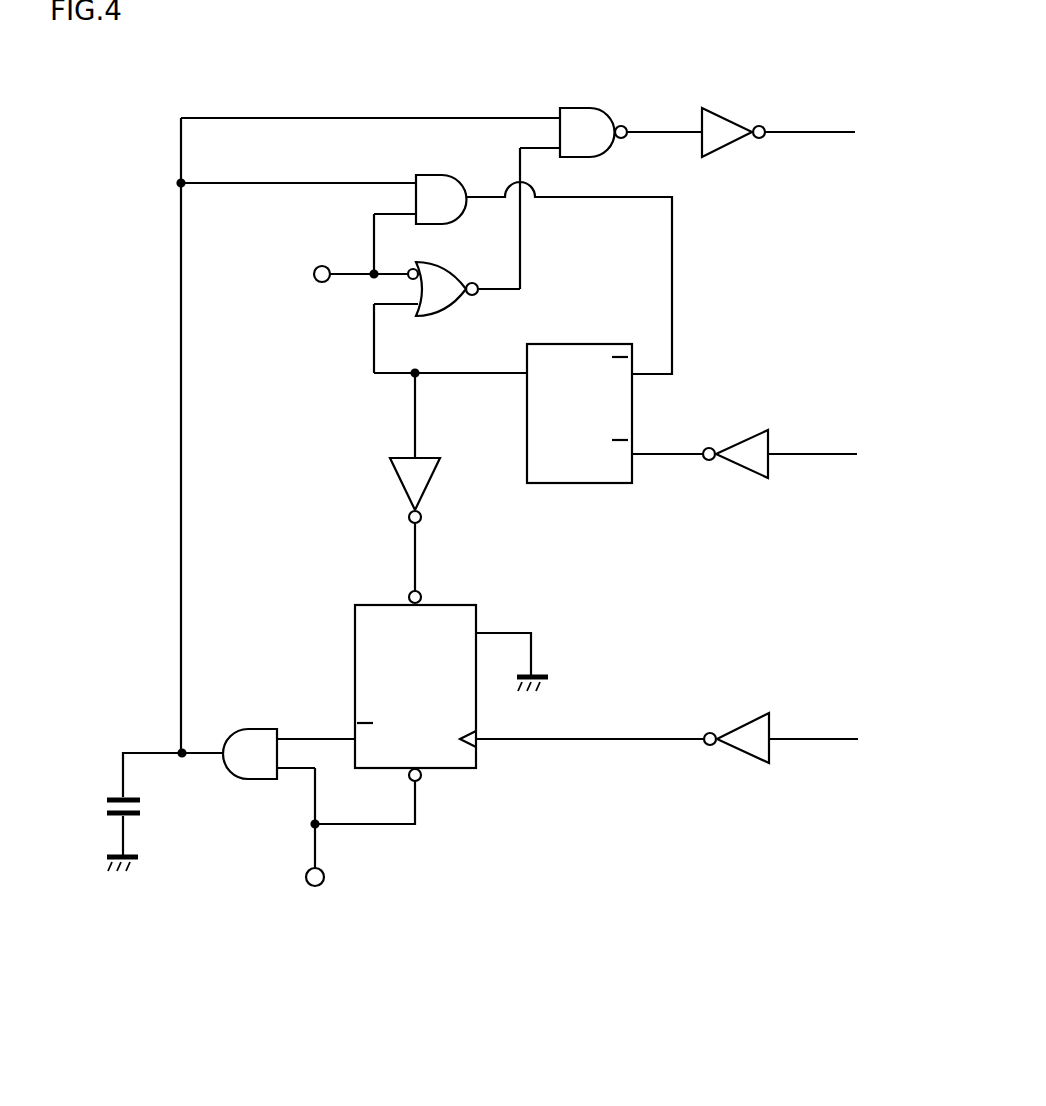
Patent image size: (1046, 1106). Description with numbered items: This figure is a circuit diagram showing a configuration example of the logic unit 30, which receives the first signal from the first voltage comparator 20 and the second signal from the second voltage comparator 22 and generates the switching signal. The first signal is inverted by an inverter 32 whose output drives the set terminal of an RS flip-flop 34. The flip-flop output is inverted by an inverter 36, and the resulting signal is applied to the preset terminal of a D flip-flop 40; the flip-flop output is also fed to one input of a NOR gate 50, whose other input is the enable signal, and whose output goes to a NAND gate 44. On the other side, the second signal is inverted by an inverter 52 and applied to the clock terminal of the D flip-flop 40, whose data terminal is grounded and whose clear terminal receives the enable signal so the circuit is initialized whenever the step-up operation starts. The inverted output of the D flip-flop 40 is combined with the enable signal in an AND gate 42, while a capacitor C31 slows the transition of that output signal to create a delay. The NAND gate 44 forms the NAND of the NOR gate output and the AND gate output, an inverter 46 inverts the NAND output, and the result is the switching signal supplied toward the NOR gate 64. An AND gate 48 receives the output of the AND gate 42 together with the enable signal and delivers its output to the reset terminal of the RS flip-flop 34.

The first voltage comparator 20 is at (829, 455).
The second voltage comparator 22 is at (829, 742).
The logic unit 30 is at (518, 1042).
The inverter 32 is at (740, 470).
The RS flip-flop 34 is at (580, 344).
The inverter 36 is at (428, 480).
The D flip-flop 40 is at (355, 658).
The AND gate 42 is at (253, 779).
The NAND gate 44 is at (583, 108).
The inverter 46 is at (738, 108).
The AND gate 48 is at (440, 175).
The NOR gate 50 is at (442, 264).
The inverter 52 is at (740, 753).
The NOR gate 64 is at (830, 134).
The capacitor C31 is at (102, 831).